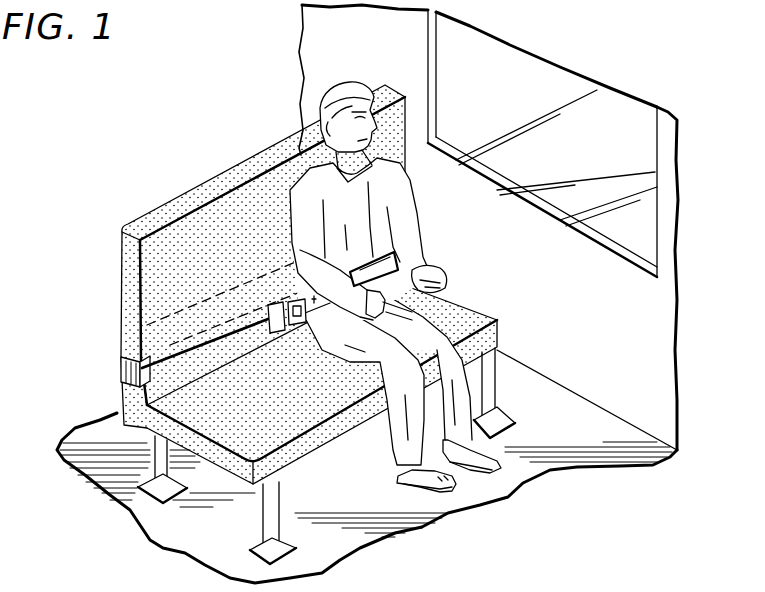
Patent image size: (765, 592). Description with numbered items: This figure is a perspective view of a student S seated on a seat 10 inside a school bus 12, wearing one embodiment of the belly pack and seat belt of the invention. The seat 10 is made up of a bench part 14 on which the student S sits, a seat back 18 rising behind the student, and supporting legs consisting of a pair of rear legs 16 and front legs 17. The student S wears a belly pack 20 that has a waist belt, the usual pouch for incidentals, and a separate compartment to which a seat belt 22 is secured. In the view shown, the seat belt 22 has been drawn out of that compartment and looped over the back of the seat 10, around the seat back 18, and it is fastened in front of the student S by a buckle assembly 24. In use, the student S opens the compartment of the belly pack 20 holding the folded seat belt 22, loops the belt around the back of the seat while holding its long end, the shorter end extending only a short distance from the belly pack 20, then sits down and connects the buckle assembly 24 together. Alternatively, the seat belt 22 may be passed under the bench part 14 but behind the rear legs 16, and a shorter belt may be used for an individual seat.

The seat 10 is at (208, 182).
The school bus 12 is at (643, 317).
The bench part 14 is at (290, 457).
The rear legs 16 is at (158, 494).
The front legs 17 is at (503, 392).
The seat back 18 is at (123, 274).
The belly pack 20 is at (369, 252).
The seat belt 22 is at (120, 357).
The buckle assembly 24 is at (292, 340).
The student S is at (314, 168).